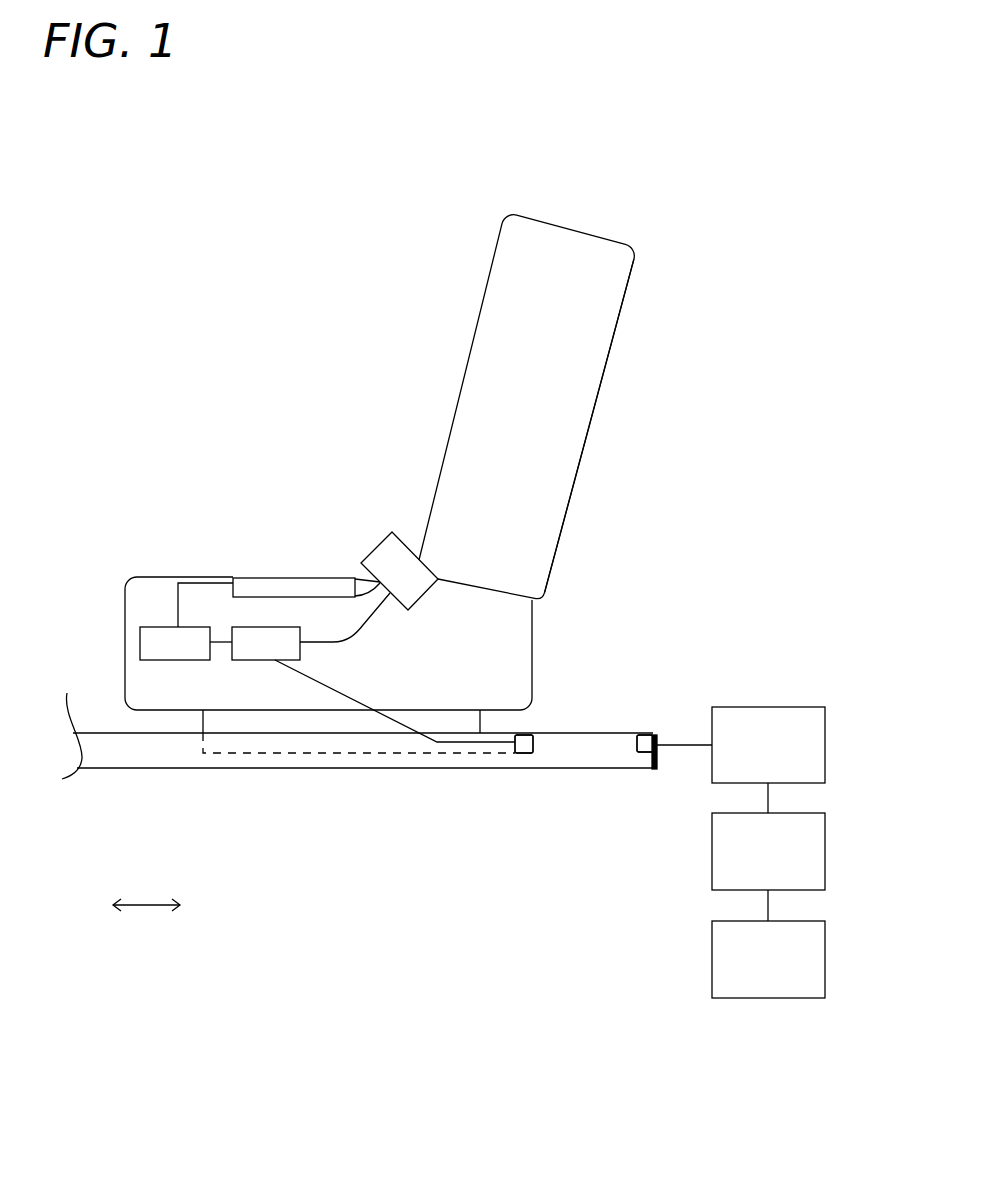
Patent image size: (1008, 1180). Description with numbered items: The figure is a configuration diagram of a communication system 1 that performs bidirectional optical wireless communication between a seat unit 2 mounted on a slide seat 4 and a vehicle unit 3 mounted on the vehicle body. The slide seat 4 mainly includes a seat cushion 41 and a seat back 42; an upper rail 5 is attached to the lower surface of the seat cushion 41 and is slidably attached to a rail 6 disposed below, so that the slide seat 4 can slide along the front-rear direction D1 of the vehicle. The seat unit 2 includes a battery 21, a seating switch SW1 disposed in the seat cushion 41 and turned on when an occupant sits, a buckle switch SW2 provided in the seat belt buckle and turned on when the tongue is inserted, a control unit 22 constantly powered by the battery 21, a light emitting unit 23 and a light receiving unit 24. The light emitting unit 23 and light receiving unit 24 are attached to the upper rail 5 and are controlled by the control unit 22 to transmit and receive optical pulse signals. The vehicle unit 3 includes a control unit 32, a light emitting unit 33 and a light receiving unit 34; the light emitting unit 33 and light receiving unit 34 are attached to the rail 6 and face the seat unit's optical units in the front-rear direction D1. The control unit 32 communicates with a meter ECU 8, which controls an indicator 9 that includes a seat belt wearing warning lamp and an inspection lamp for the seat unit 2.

The communication system 1 is at (337, 970).
The seat unit 2 is at (387, 537).
The vehicle unit 3 is at (795, 715).
The slide seat 4 is at (624, 303).
The upper rail 5 is at (483, 723).
The rail 6 is at (180, 768).
The meter ECU 8 is at (825, 866).
The indicator 9 is at (825, 968).
The battery 21 is at (140, 642).
The control unit 22 is at (263, 660).
The light emitting unit 23 is at (525, 753).
The light receiving unit 24 is at (484, 785).
The control unit 32 is at (825, 762).
The light emitting unit 33 is at (647, 752).
The light receiving unit 34 is at (646, 797).
The seat cushion 41 is at (160, 577).
The seat back 42 is at (584, 449).
The seating switch SW1 is at (310, 577).
The buckle switch SW2 is at (382, 539).
The front-rear direction D1 is at (148, 905).